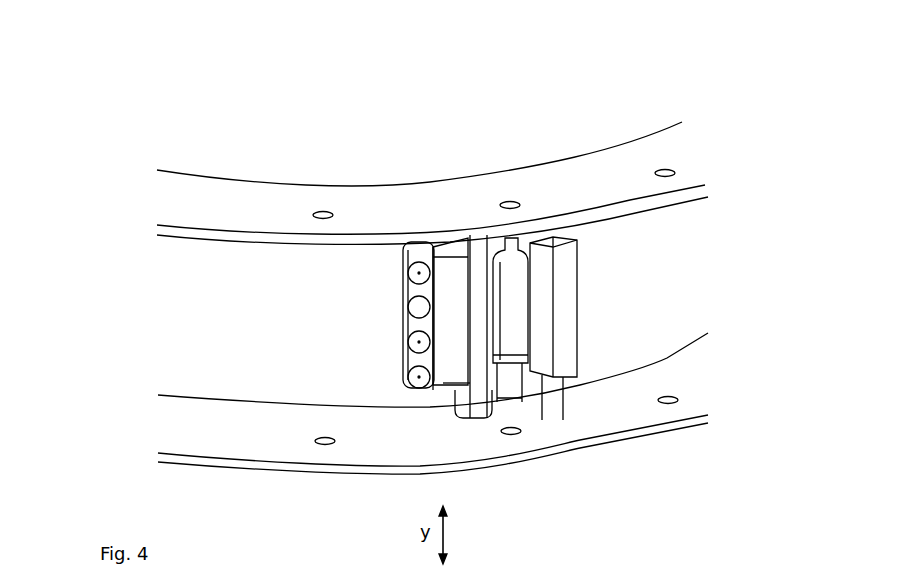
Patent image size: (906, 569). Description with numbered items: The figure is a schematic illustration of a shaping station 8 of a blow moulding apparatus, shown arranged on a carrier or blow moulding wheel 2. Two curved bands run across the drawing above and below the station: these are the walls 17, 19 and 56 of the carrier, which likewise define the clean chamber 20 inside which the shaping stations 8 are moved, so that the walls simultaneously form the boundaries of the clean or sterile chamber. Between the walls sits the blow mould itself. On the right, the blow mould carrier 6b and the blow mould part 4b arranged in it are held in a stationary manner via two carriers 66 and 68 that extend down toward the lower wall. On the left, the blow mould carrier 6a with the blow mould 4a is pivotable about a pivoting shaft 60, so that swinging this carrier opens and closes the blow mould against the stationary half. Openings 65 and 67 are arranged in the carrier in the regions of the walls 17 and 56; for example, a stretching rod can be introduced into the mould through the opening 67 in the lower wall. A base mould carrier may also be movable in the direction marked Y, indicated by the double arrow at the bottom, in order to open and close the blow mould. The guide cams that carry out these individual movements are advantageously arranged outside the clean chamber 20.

The blow moulding wheel 2 is at (283, 138).
The wall 17 is at (393, 195).
The opening 65 is at (510, 201).
The wall 19 is at (268, 297).
The wall 56 is at (262, 421).
The opening 67 is at (512, 434).
The clean chamber 20 is at (629, 303).
The shaping station 8 is at (376, 327).
The blow mould carrier 6a is at (422, 378).
The blow mould 4a is at (463, 262).
The blow mould part 4b is at (540, 262).
The blow mould carrier 6b is at (578, 268).
The pivoting shaft 60 is at (469, 390).
The carrier 68 is at (514, 372).
The carrier 66 is at (556, 397).